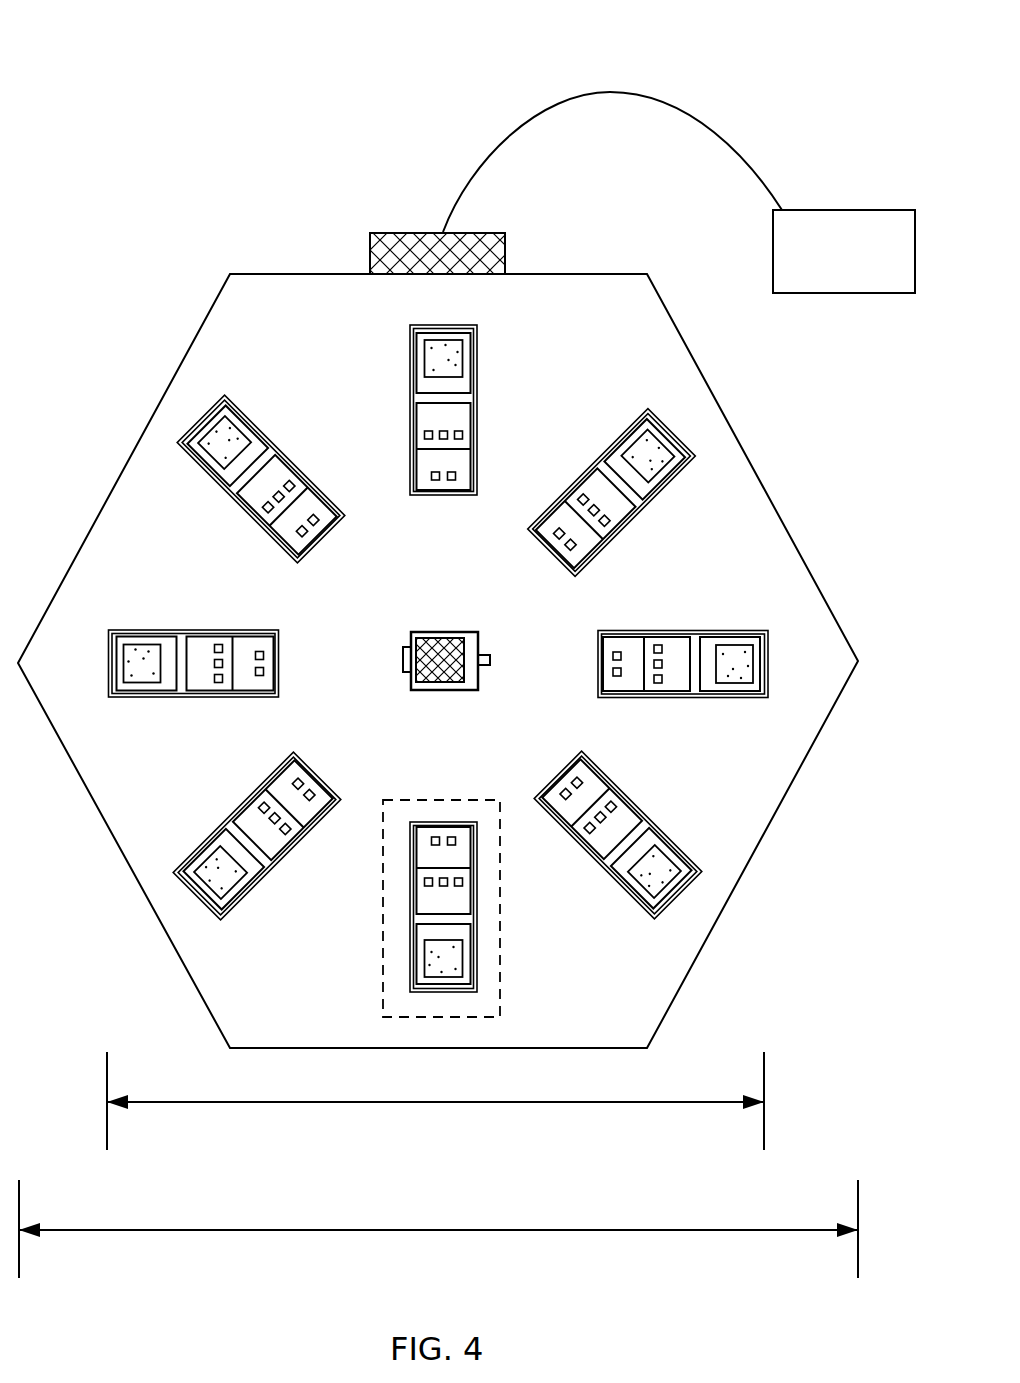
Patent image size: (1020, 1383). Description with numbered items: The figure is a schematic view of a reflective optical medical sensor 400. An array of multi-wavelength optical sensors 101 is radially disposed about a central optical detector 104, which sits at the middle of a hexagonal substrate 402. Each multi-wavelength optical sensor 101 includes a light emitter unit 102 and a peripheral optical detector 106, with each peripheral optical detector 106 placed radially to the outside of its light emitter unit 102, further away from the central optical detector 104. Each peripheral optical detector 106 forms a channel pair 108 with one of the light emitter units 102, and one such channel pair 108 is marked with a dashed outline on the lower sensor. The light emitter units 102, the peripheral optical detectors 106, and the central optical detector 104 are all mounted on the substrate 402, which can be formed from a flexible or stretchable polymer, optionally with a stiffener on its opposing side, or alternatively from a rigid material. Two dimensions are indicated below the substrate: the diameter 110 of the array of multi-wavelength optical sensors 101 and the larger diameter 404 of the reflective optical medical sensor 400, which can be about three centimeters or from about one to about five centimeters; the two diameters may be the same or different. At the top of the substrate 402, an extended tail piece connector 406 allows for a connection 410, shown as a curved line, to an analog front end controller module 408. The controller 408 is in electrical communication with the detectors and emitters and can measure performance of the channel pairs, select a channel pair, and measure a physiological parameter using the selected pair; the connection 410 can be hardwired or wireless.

The reflective optical medical sensor 400 is at (152, 36).
The substrate 402 is at (128, 458).
The diameter 404 is at (438, 1232).
The extended tail piece connector 406 is at (373, 236).
The analog front end controller module 408 is at (866, 261).
The connection 410 is at (538, 108).
The multi-wavelength optical sensor 101 is at (226, 400).
The light emitter unit 102 is at (462, 467).
The central optical detector 104 is at (470, 630).
The peripheral optical detector 106 is at (458, 362).
The channel pair 108 is at (498, 970).
The diameter 110 is at (435, 1101).